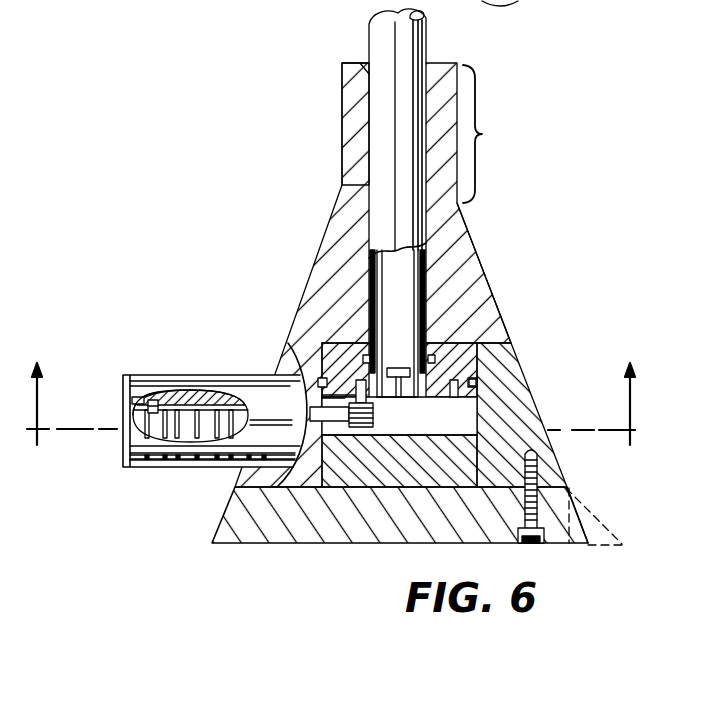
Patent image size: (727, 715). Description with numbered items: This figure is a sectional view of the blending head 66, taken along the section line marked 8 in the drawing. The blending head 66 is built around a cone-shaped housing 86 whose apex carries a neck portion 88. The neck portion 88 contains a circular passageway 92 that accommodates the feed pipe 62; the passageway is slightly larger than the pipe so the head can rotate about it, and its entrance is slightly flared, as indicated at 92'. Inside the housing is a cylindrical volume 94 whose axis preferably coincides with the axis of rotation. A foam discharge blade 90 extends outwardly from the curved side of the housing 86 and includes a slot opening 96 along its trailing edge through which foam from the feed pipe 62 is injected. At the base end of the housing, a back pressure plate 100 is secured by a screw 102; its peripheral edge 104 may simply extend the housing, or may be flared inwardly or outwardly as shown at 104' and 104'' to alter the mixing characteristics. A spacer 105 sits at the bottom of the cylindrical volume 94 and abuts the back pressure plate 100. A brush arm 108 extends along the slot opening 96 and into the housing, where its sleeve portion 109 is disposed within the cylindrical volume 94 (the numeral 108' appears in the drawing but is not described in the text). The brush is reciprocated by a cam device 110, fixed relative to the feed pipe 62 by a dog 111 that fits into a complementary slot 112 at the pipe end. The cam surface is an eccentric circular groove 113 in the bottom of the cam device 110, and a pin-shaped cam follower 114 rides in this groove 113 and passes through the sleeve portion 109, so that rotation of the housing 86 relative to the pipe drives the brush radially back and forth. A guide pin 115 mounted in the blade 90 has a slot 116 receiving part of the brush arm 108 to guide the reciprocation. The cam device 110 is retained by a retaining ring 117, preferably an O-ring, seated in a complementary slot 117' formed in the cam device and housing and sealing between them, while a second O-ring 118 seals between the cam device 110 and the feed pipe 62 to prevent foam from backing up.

The section line 8- 8 is at (335, 395).
The feed pipe 62 is at (382, 32).
The blending head 66 is at (233, 247).
The cone-shaped housing 86 is at (460, 250).
The neck portion 88 is at (489, 134).
The foam discharge blade 90 is at (142, 382).
The circular passageway 92 is at (331, 106).
The flared entrance 92' is at (343, 50).
The cylindrical volume 94 is at (478, 426).
The slot opening 96 is at (134, 468).
The back pressure plate 100 is at (243, 536).
The screw 102 is at (530, 543).
The peripheral edge 104 is at (607, 525).
The flared peripheral edge 104' is at (636, 543).
The flared peripheral edge 104'' is at (559, 531).
The spacer 105 is at (410, 470).
The brush arm 108 is at (120, 404).
The pin 108' is at (315, 422).
The sleeve portion 109 is at (374, 418).
The cam device 110 is at (475, 344).
The dog 111 is at (404, 394).
The complementary slot 112 is at (400, 335).
The circular groove 113 is at (452, 398).
The cam follower 114 is at (322, 397).
The guide pin 115 is at (140, 401).
The slot 116 is at (160, 408).
The retaining ring 117 is at (464, 348).
The complementary slot 117' is at (519, 374).
The O-ring 118 is at (488, 296).